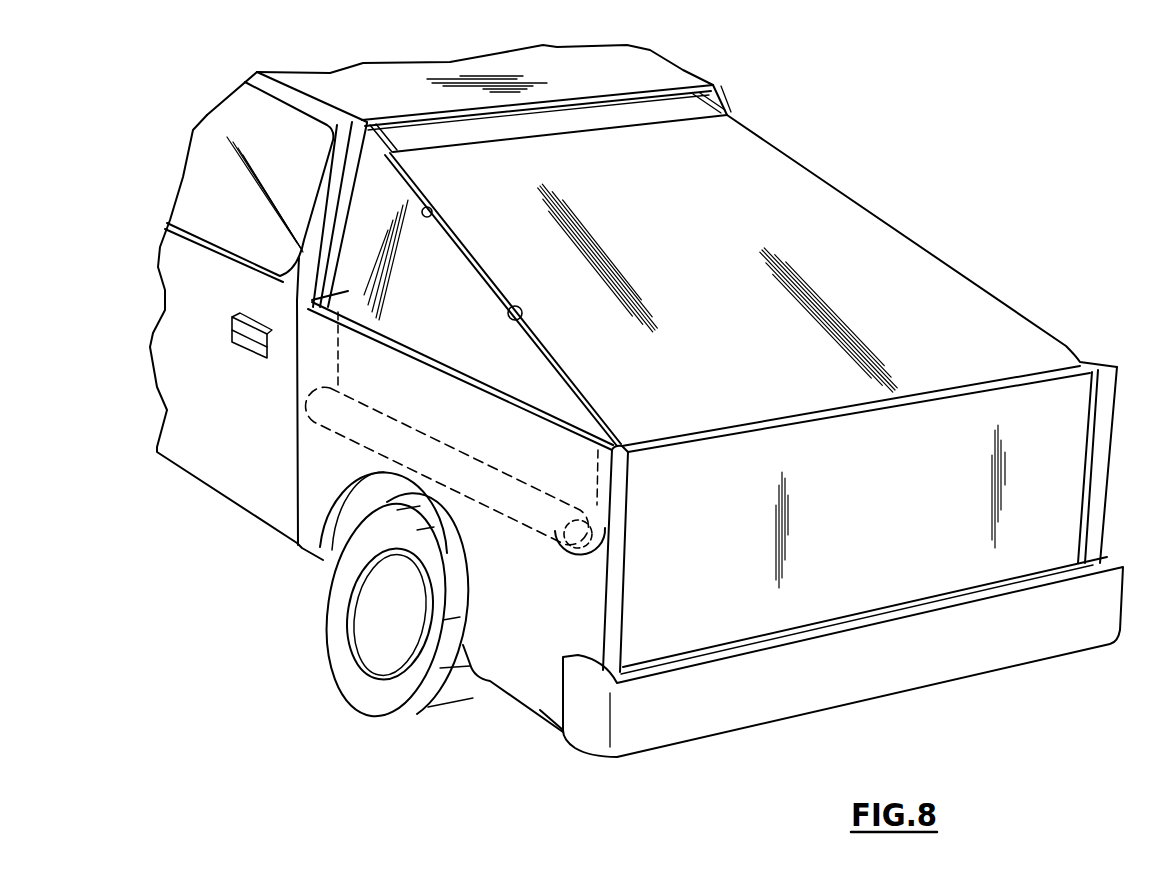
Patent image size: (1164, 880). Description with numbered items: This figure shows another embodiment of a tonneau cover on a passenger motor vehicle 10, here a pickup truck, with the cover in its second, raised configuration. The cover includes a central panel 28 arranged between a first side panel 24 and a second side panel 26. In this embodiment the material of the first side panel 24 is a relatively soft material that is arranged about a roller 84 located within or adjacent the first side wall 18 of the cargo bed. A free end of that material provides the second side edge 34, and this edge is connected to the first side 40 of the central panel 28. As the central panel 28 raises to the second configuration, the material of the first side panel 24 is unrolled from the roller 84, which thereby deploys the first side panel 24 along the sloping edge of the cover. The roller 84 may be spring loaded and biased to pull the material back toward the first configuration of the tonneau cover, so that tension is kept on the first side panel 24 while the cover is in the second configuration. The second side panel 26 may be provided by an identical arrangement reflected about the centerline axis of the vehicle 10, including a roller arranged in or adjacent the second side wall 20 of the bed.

The vehicle 10 is at (586, 295).
The first side wall 18 is at (478, 608).
The second side wall 20 is at (1098, 348).
The first side panel 24 is at (376, 268).
The second side panel 26 is at (946, 258).
The central panel 28 is at (765, 182).
The second side edge 34 is at (511, 317).
The first side 40 is at (433, 211).
The roller 84 is at (553, 535).